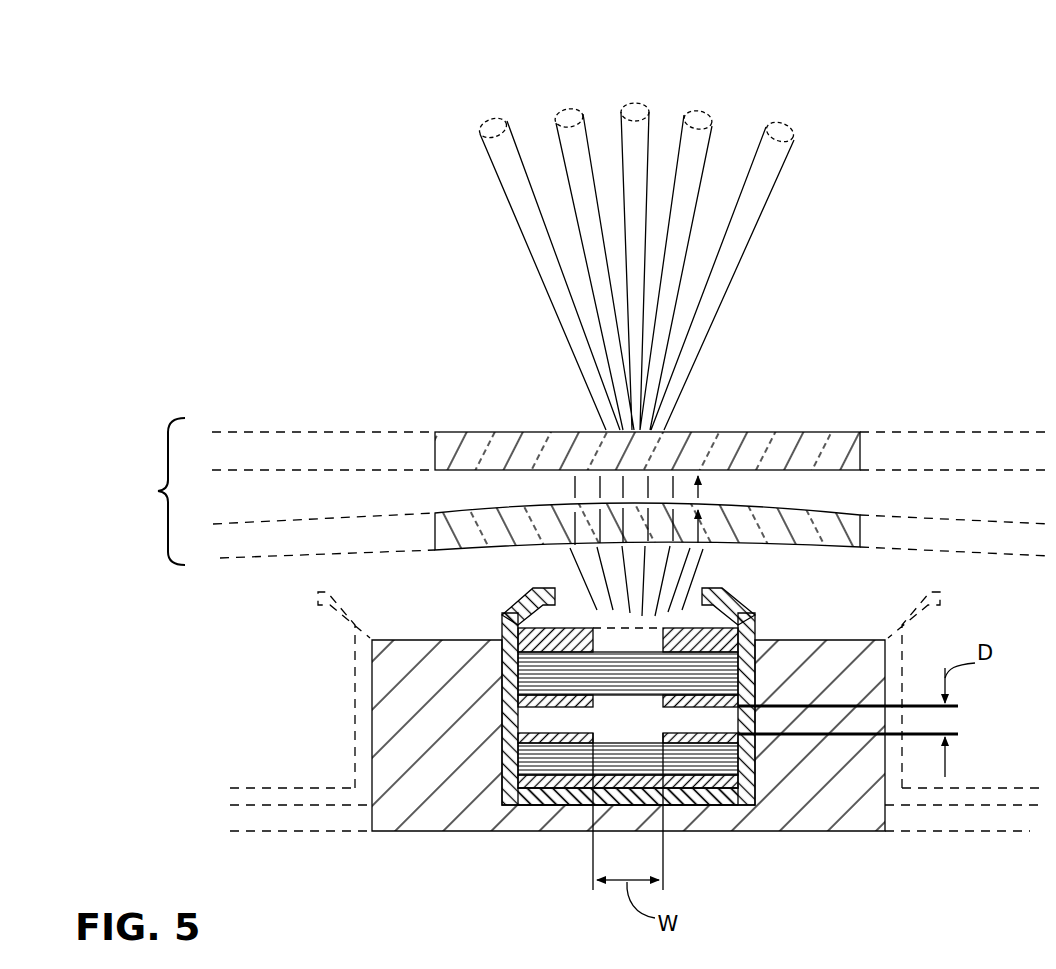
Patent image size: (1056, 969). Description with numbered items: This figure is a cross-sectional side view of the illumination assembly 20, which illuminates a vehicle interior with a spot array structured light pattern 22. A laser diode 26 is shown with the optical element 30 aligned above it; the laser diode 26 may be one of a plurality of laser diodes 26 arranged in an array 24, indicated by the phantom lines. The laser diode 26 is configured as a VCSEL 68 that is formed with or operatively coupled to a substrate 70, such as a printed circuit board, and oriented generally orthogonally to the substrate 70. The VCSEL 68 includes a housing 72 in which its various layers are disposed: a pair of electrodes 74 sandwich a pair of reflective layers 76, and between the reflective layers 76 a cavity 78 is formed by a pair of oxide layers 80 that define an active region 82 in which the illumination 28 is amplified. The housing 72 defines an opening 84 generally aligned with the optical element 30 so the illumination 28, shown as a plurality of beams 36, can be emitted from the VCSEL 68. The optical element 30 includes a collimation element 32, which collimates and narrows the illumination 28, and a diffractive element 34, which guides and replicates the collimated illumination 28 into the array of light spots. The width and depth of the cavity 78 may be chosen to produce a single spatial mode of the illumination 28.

The illumination assembly 20 is at (300, 356).
The spot array structured light pattern 22 is at (840, 181).
The array 24 is at (213, 700).
The laser diode 26 is at (764, 743).
The illumination 28 is at (612, 628).
The optical element 30 is at (587, 491).
The collimation element 32 is at (822, 520).
The diffractive element 34 is at (807, 431).
The beam 36 is at (568, 108).
The VCSEL 68 is at (697, 808).
The substrate 70 is at (402, 808).
The housing 72 is at (497, 786).
The electrodes 74 is at (752, 604).
The reflective layers 76 is at (560, 678).
The cavity 78 is at (618, 732).
The oxide layers 80 is at (724, 696).
The active region 82 is at (658, 720).
The opening 84 is at (622, 634).